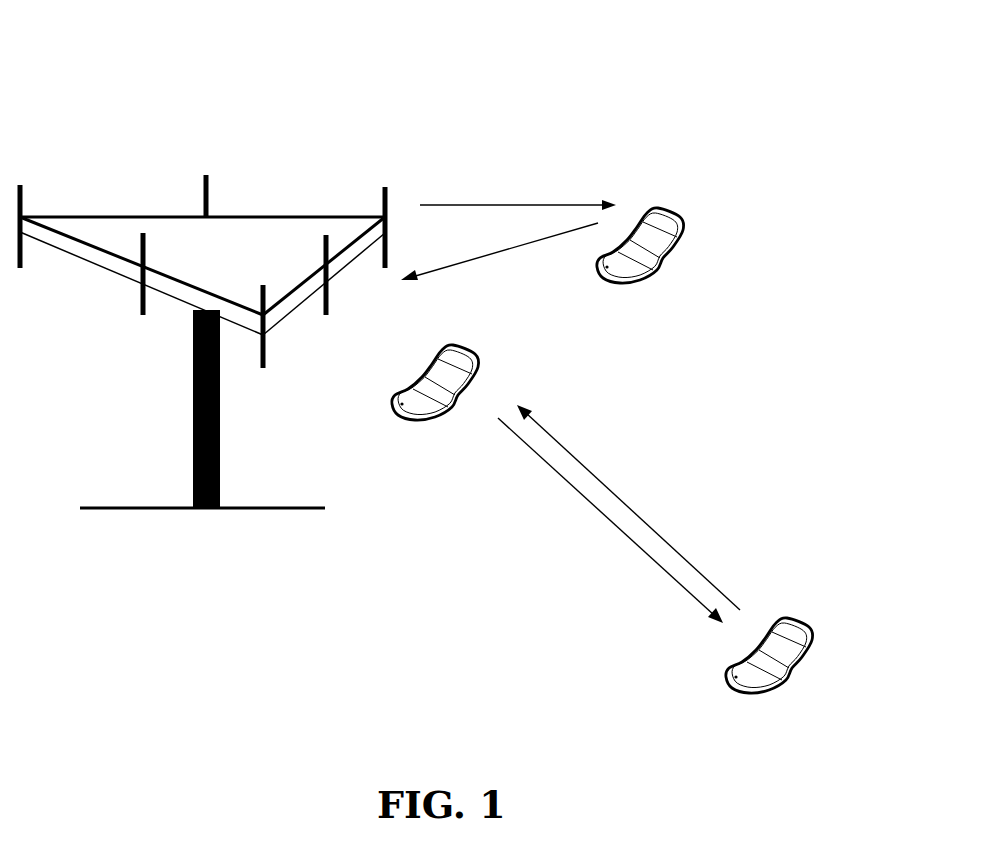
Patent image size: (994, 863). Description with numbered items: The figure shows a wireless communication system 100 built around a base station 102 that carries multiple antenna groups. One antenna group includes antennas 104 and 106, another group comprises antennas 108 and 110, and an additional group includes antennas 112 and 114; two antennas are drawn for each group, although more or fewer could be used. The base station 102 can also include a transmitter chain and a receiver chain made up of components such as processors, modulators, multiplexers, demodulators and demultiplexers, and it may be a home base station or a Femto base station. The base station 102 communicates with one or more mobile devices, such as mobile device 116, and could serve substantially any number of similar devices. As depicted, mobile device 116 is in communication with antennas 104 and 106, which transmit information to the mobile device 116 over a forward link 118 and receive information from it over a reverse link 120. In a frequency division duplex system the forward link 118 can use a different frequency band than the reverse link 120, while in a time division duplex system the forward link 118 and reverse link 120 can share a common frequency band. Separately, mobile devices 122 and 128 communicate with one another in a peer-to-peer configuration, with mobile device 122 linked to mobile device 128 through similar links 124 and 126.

The wireless communication system 100 is at (590, 45).
The base station 102 is at (221, 509).
The antenna 104 is at (386, 188).
The antenna 106 is at (330, 305).
The antenna 108 is at (266, 350).
The antenna 110 is at (143, 314).
The antenna 112 is at (21, 185).
The antenna 114 is at (207, 178).
The mobile device 116 is at (652, 208).
The forward link 118 is at (512, 205).
The reverse link 120 is at (487, 257).
The mobile device 122 is at (445, 343).
The link 124 is at (612, 522).
The link 126 is at (628, 508).
The mobile device 128 is at (778, 617).